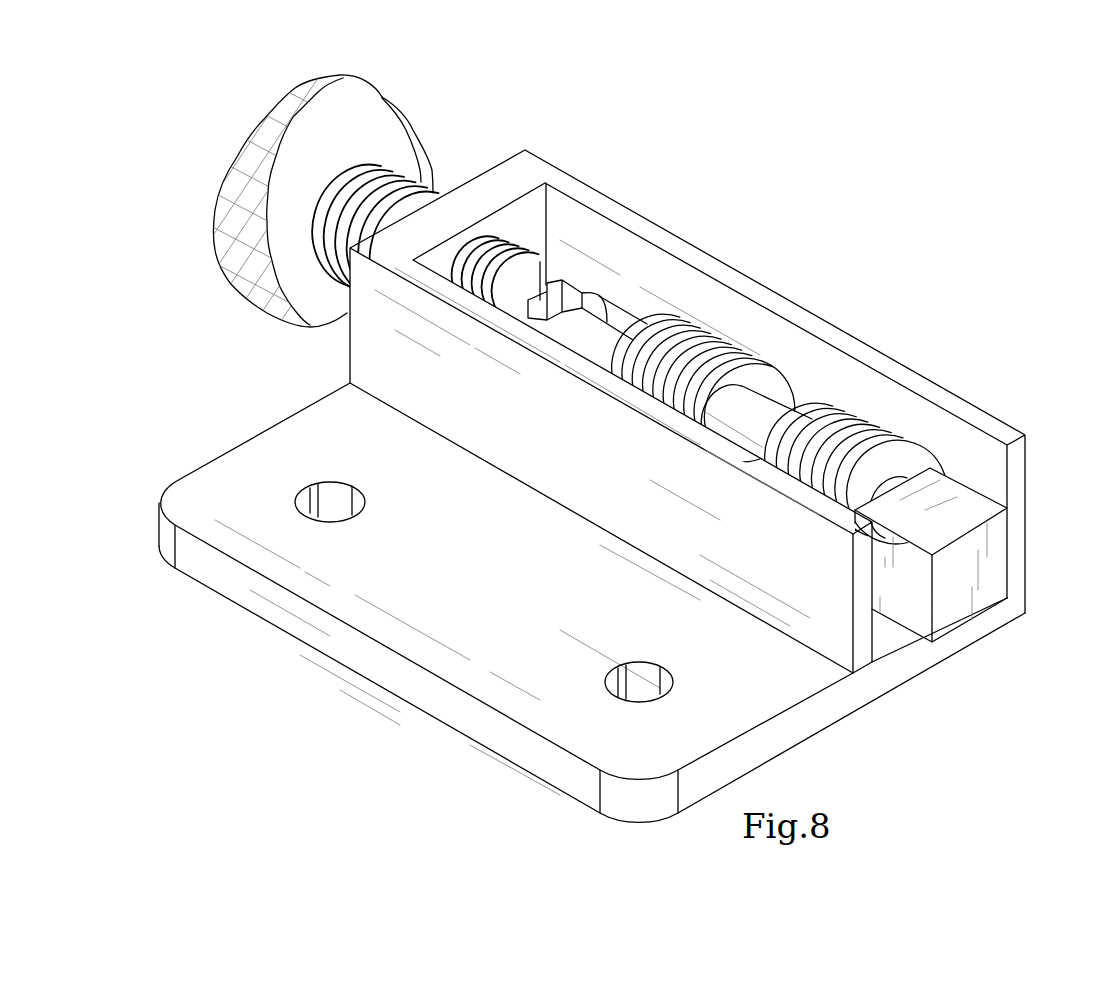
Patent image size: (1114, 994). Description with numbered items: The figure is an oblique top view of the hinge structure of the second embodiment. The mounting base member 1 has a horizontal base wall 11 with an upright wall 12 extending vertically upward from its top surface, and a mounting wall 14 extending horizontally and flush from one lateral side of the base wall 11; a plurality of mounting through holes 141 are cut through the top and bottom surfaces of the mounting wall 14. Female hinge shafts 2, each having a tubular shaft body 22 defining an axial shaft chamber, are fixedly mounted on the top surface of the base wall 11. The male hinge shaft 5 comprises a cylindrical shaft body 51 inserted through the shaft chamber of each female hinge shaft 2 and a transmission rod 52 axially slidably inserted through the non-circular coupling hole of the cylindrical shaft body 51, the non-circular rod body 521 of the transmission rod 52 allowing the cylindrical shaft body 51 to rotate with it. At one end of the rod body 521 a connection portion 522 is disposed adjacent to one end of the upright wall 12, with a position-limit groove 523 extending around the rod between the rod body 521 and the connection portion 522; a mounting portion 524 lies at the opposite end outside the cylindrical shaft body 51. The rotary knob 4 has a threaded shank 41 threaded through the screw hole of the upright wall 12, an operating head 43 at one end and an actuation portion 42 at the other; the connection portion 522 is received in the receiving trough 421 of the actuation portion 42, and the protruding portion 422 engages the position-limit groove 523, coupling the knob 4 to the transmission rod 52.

The mounting base member 1 is at (245, 432).
The horizontal base wall 11 is at (893, 638).
The upright wall 12 is at (497, 176).
The mounting wall 14 is at (430, 693).
The mounting through hole 141 is at (345, 515).
The female hinge shaft 2 is at (730, 326).
The tubular shaft body 22 is at (768, 402).
The rotary knob 4 is at (280, 207).
The threaded shank 41 is at (419, 190).
The actuation portion 42 is at (507, 280).
The receiving trough 421 is at (532, 268).
The protruding portion 422 is at (580, 310).
The operating head 43 is at (215, 218).
The male hinge shaft 5 is at (826, 397).
The cylindrical shaft body 51 is at (786, 400).
The transmission rod 52 is at (637, 318).
The non-circular rod body 521 is at (610, 330).
The connection portion 522 is at (558, 296).
The position-limit groove 523 is at (556, 303).
The slider block 524 is at (960, 503).